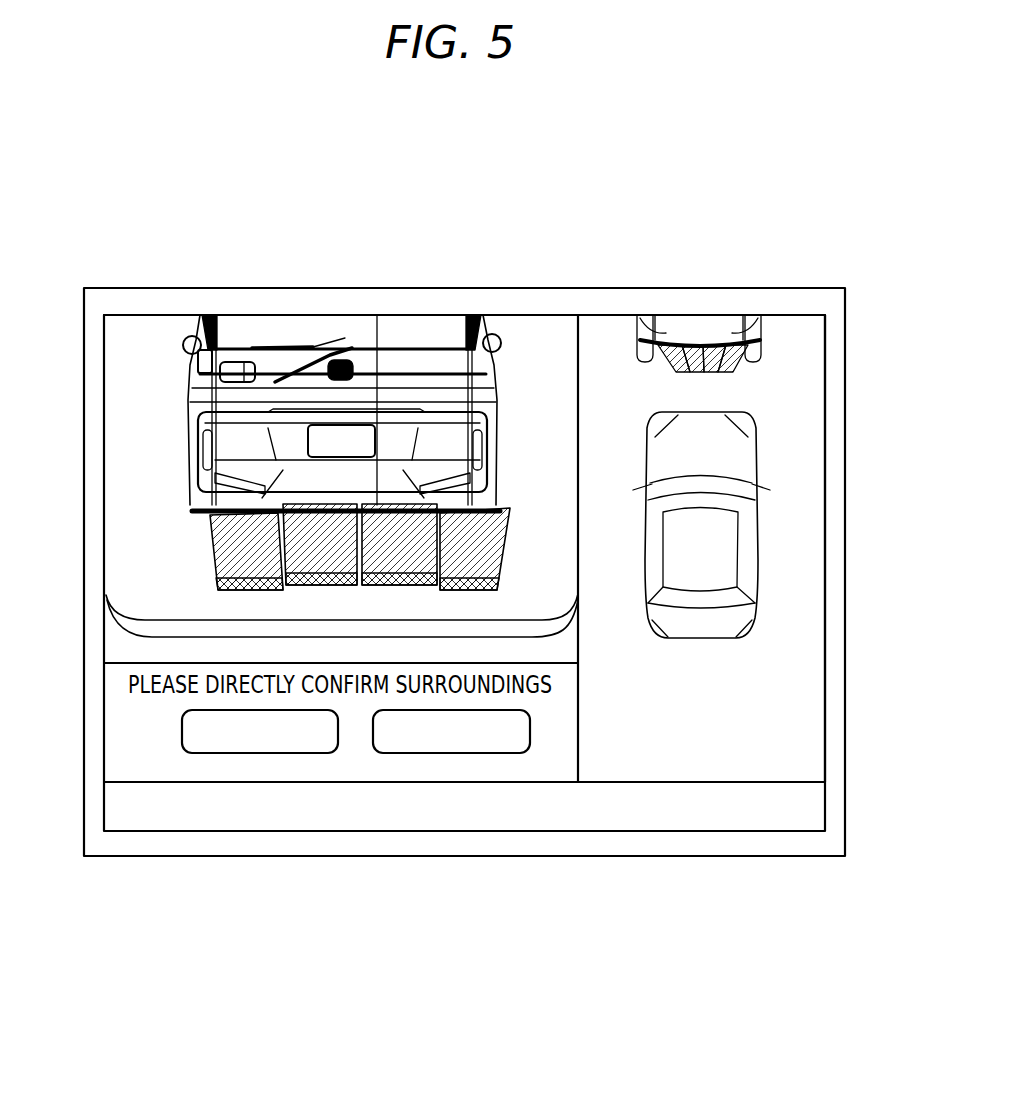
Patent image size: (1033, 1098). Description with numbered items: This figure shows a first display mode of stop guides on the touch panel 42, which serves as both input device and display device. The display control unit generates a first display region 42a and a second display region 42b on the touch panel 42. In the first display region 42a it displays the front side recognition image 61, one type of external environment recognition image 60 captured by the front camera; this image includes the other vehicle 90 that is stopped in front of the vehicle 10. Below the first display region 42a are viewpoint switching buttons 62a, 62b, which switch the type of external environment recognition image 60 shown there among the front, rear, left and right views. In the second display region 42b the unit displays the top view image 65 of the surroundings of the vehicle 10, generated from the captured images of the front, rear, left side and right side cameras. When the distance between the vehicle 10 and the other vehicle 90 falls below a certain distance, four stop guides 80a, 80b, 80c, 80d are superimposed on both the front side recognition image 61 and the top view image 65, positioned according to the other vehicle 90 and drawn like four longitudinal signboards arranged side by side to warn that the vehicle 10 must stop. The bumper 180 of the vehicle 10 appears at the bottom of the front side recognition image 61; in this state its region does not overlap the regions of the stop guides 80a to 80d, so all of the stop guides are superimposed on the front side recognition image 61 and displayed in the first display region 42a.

The touch panel 42 is at (452, 290).
The first display region 42a is at (125, 312).
The second display region 42b is at (600, 315).
The external environment recognition image 60 is at (464, 537).
The front side recognition image 61 is at (515, 340).
The viewpoint switching button 62a is at (255, 735).
The viewpoint switching button 62b is at (448, 737).
The top view image 65 is at (800, 497).
The vehicle 10 is at (698, 625).
The other vehicle 90 is at (280, 330).
The stop guide 80a is at (245, 533).
The stop guide 80b is at (783, 424).
The stop guide 80c is at (783, 424).
The stop guide 80d is at (783, 424).
The bumper 180 is at (155, 642).